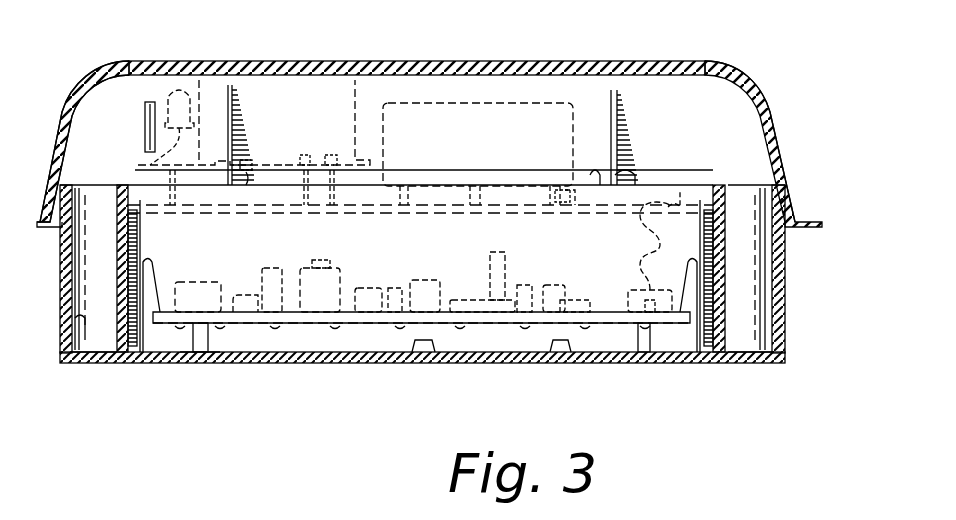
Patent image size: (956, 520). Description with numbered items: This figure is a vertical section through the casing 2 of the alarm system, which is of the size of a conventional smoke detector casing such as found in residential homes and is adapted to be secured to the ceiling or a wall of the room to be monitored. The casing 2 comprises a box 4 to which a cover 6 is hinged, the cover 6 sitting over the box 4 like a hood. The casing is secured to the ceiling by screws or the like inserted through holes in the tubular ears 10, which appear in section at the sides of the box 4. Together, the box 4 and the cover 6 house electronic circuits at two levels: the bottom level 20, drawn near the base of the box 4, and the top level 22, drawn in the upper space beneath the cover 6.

The casing 2 is at (705, 368).
The box 4 is at (129, 185).
The cover 6 is at (784, 100).
The tubular ears 10 is at (770, 306).
The bottom level 20 is at (316, 326).
The top level 22 is at (505, 116).